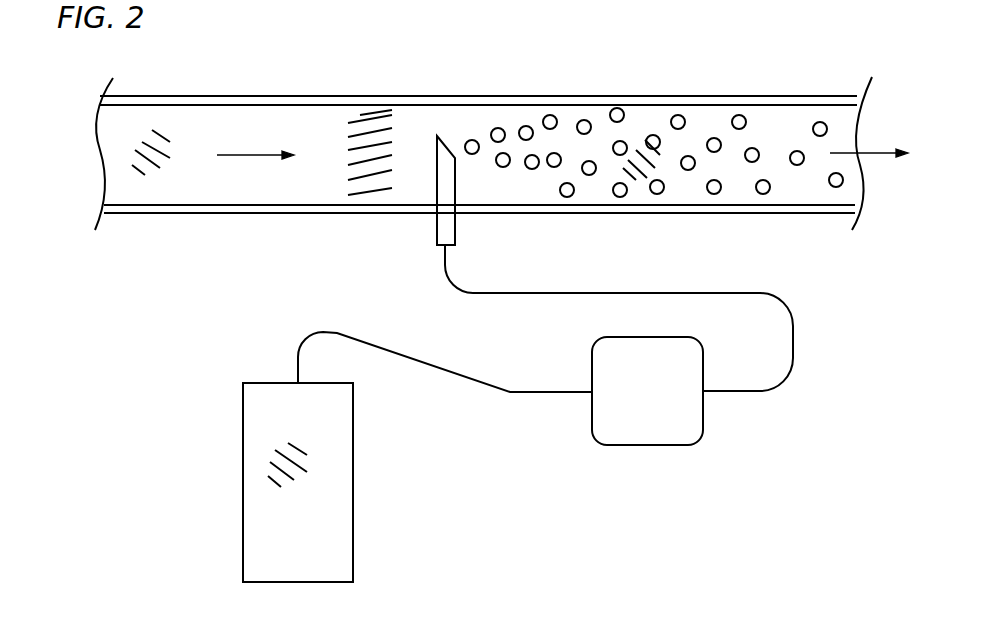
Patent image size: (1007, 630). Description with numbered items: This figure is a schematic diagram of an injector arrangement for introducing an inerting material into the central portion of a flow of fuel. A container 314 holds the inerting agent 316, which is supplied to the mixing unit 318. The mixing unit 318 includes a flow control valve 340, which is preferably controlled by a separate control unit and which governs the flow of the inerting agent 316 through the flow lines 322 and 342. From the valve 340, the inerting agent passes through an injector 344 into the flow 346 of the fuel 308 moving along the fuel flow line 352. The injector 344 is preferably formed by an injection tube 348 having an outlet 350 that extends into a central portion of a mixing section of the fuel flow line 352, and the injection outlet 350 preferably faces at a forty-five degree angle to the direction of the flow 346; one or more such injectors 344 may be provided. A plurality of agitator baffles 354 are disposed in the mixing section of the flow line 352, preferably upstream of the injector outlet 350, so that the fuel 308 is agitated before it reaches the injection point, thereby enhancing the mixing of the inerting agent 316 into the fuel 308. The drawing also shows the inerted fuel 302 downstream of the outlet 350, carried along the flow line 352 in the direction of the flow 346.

The particles in fluid stream 302 is at (638, 148).
The fuel 308 is at (162, 137).
The container 314 is at (353, 460).
The inerting agent 316 is at (277, 455).
The mixing unit 318 is at (405, 295).
The flow line 322 is at (443, 367).
The flow control valve 340 is at (670, 400).
The flow line 342 is at (567, 293).
The injector 344 is at (455, 225).
The flow of the fuel 346 is at (257, 153).
The injection tube 348 is at (437, 160).
The outlet 350 is at (437, 136).
The fuel flow line 352 is at (533, 100).
The agitator baffles 354 is at (370, 120).